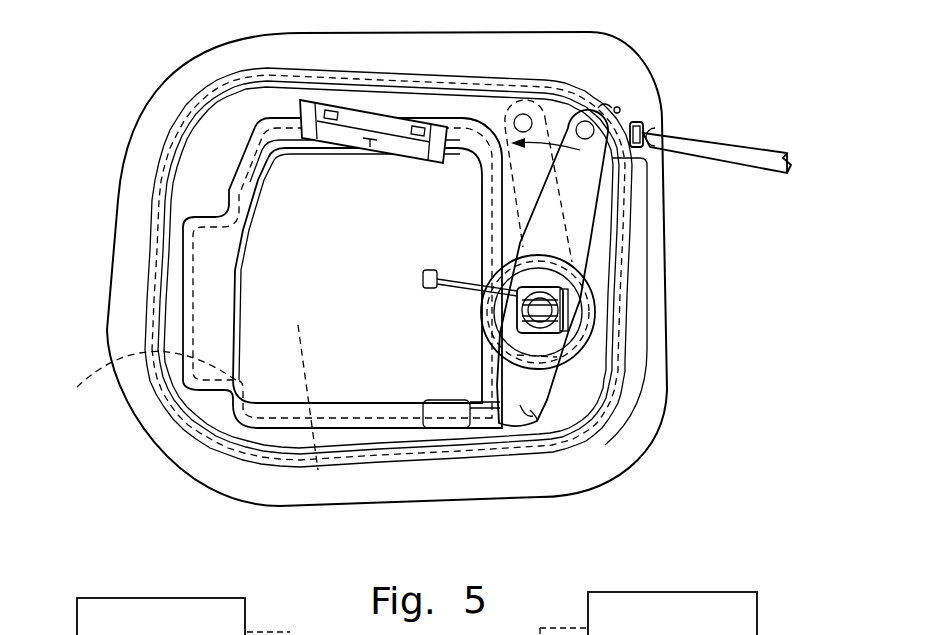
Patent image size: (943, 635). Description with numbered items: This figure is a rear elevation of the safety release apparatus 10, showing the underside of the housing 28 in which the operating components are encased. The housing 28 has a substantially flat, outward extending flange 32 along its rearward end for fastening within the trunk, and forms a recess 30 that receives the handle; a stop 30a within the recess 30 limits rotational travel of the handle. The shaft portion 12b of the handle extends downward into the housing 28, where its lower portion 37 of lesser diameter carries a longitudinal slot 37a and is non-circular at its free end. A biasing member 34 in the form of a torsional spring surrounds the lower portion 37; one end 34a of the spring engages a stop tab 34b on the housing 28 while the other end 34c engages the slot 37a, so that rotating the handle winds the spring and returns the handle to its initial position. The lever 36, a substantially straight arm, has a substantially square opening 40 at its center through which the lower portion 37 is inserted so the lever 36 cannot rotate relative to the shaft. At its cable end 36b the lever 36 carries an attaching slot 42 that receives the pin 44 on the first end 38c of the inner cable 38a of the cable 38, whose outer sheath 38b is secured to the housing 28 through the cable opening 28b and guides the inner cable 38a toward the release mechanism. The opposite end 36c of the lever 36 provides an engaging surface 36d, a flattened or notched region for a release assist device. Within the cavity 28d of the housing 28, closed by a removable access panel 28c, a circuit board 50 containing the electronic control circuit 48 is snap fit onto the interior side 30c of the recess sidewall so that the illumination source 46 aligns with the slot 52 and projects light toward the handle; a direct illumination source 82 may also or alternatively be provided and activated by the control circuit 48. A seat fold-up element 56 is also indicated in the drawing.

The safety release apparatus 10 is at (121, 24).
The shaft portion 12b is at (498, 355).
The housing 28 is at (106, 212).
The cable opening 28b is at (673, 133).
The removable access panel 28c is at (410, 75).
The cavity 28d is at (453, 112).
The recess 30 is at (317, 473).
The stop 30a is at (142, 383).
The interior side of sidewall 30c is at (490, 125).
The flange 32 is at (645, 405).
The biasing member 34 is at (567, 300).
The end of biasing member 34a is at (427, 270).
The stop tab 34b is at (430, 289).
The end of biasing member 34c is at (557, 350).
The lever 36 is at (580, 223).
The cable end of lever 36b is at (562, 97).
The opposite end of lever 36c is at (530, 425).
The engaging surface 36d is at (497, 425).
The lower portion of shaft 37 is at (563, 273).
The slot 37a is at (488, 342).
The cable 38 is at (756, 162).
The inner cable 38a is at (646, 99).
The outer sheath 38b is at (770, 143).
The first end of inner cable 38c is at (628, 113).
The opening 40 is at (530, 353).
The attaching slot 42 is at (618, 107).
The pin 44 is at (604, 104).
The illumination source 46 is at (330, 113).
The electronic control circuit 48 is at (345, 125).
The circuit board 50 is at (375, 133).
The slot 52 is at (330, 158).
The seat fold-up sensor 56 is at (62, 633).
The direct illumination source 82 is at (757, 625).